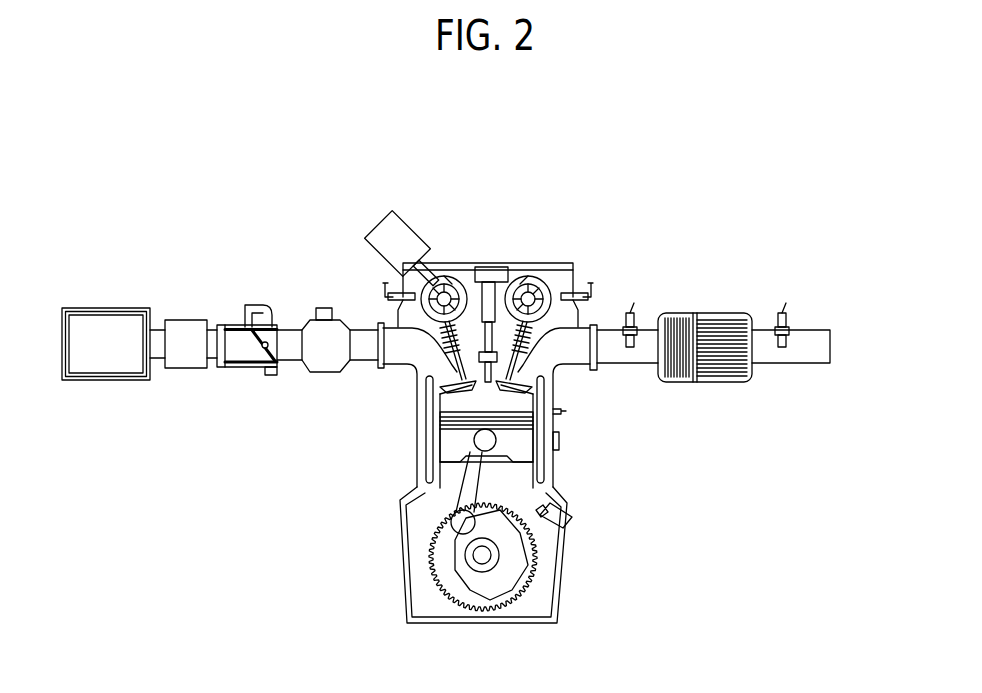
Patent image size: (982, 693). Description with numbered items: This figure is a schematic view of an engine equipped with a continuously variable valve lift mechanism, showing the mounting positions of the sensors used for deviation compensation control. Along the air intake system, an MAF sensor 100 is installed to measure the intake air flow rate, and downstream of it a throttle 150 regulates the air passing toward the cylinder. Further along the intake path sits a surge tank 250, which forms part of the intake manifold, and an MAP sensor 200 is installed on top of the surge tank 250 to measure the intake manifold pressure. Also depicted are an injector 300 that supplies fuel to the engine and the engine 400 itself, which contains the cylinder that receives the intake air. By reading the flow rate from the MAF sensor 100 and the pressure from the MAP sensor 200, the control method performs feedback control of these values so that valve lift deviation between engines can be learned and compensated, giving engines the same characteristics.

The MAF sensor 100 is at (187, 322).
The throttle 150 is at (262, 349).
The MAP sensor 200 is at (323, 306).
The surge tank 250 is at (324, 374).
The fuel injector 300 is at (417, 211).
The engine 400 is at (285, 490).